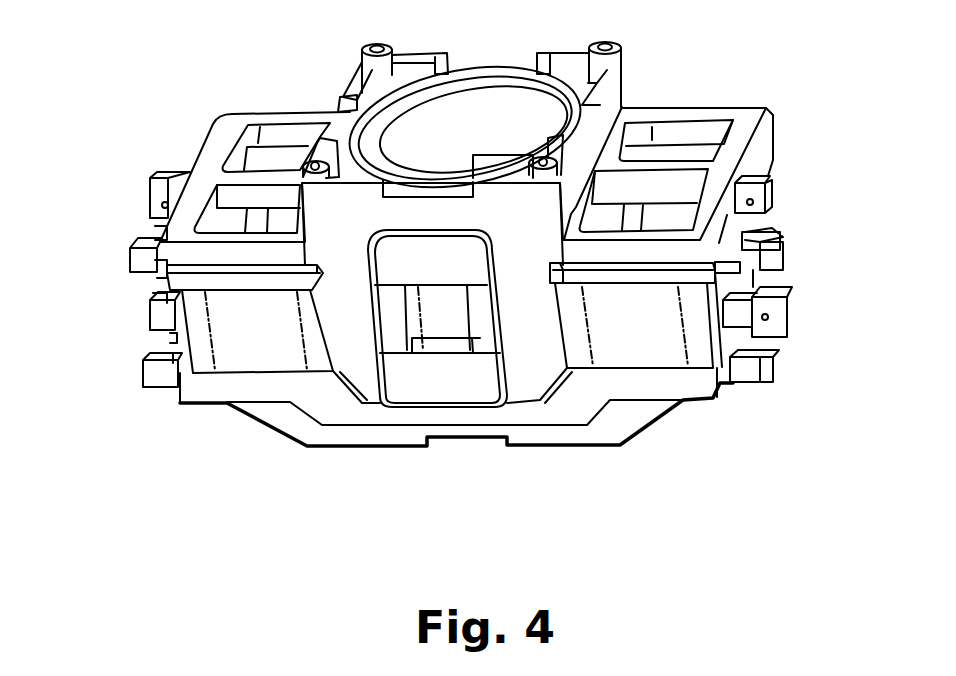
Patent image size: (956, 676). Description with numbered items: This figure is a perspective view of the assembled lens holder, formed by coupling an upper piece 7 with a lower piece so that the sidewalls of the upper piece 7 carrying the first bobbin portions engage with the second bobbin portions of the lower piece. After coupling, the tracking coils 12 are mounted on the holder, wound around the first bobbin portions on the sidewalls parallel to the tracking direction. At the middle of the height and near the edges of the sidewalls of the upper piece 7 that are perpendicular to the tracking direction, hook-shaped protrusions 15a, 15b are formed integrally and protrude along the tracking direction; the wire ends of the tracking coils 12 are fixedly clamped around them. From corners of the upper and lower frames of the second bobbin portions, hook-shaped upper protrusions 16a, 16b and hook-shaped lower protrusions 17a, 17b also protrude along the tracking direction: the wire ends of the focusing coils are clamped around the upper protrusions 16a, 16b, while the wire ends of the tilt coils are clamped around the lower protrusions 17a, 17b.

The upper piece 7 is at (312, 203).
The tracking coils 12 is at (395, 342).
The hook-shaped protrusion 15a is at (150, 312).
The hook-shaped protrusion 15b is at (737, 317).
The hook-shaped upper protrusion 16a is at (133, 248).
The hook-shaped upper protrusion 16b is at (760, 282).
The hook-shaped lower protrusion 17a is at (143, 372).
The hook-shaped lower protrusion 17b is at (740, 373).